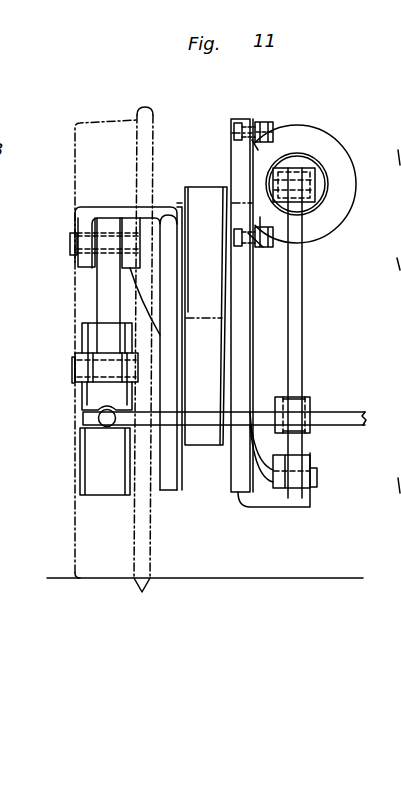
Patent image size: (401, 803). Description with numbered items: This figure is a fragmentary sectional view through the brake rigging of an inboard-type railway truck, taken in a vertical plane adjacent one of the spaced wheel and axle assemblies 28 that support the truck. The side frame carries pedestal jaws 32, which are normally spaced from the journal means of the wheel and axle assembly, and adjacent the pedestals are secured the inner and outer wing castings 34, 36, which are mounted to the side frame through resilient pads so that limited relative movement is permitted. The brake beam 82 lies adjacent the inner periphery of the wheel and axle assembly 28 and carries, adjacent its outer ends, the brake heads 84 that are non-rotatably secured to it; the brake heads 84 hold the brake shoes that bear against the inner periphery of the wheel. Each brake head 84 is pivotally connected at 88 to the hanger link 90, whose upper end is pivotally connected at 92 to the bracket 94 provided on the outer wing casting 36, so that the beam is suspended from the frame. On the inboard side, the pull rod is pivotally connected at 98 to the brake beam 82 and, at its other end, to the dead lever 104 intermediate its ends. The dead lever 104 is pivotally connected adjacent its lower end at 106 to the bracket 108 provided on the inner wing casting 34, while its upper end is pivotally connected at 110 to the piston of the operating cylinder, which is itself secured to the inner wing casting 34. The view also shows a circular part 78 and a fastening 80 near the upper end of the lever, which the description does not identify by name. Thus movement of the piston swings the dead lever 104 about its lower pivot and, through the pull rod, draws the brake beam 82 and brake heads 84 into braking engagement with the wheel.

The wheel and axle assembly 28 is at (105, 570).
The pedestal jaw 32 is at (207, 445).
The inner wing casting 34 is at (233, 490).
The outer wing casting 36 is at (172, 490).
The disc 78 is at (347, 165).
The bolt 80 is at (260, 125).
The brake beam 82 is at (347, 417).
The brake head 84 is at (93, 457).
The pivotal connection 88 is at (75, 368).
The hanger link 90 is at (103, 283).
The pivotal connection 92 is at (70, 237).
The bracket 94 is at (80, 208).
The pivotal connection 98 is at (295, 407).
The dead lever 104 is at (298, 323).
The pivotal connection 106 is at (317, 482).
The bracket 108 is at (305, 507).
The pivotal connection 110 is at (303, 172).